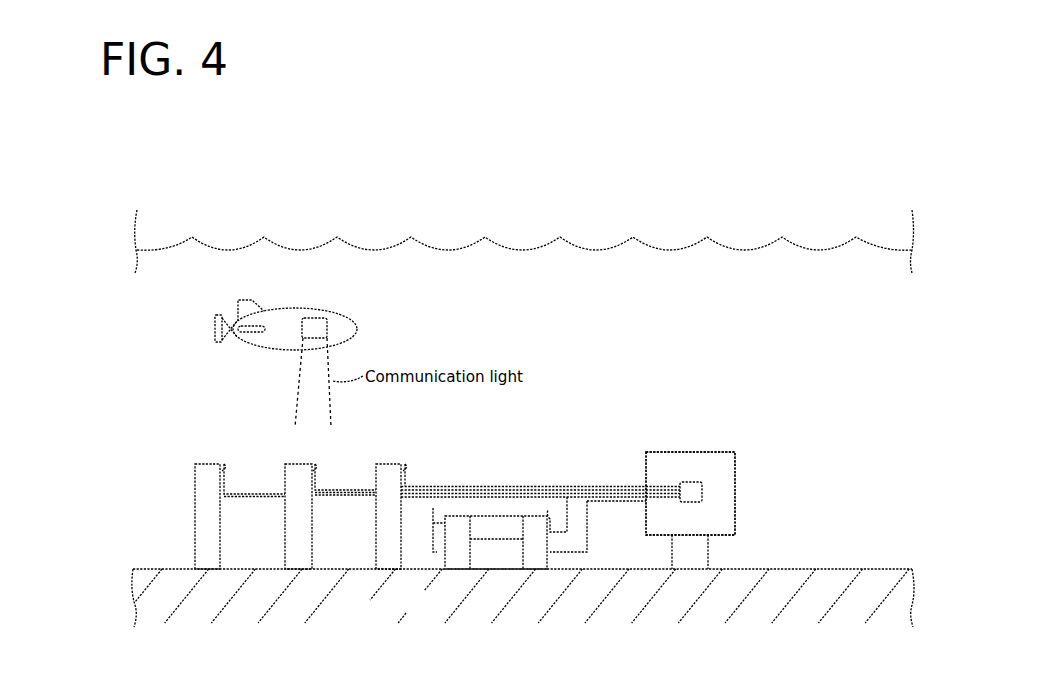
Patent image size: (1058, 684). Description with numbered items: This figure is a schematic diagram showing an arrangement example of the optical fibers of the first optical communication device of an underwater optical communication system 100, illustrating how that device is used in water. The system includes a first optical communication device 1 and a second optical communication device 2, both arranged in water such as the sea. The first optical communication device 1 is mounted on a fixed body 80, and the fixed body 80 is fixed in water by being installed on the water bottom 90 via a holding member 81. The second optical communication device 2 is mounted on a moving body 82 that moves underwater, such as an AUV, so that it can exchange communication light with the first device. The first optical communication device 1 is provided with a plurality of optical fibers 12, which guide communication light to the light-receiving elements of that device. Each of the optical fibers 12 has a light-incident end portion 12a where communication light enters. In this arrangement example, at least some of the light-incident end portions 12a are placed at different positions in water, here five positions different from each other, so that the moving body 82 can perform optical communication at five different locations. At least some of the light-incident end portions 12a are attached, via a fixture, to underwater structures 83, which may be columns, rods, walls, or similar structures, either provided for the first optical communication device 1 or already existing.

The underwater optical communication system 100 is at (328, 205).
The second optical communication device 2 is at (317, 317).
The moving body 82 is at (352, 312).
The underwater structure 83 is at (210, 463).
The light-incident end portion 12a is at (228, 466).
The optical fibers 12 is at (621, 486).
The first optical communication device 1 is at (736, 462).
The fixed body 80 is at (736, 496).
The holding member 81 is at (671, 549).
The water bottom 90 is at (803, 568).